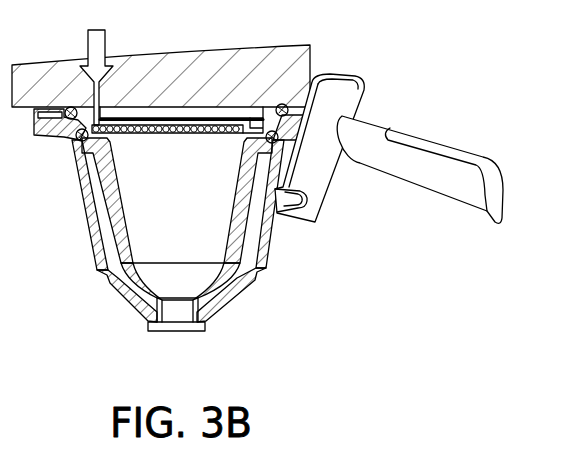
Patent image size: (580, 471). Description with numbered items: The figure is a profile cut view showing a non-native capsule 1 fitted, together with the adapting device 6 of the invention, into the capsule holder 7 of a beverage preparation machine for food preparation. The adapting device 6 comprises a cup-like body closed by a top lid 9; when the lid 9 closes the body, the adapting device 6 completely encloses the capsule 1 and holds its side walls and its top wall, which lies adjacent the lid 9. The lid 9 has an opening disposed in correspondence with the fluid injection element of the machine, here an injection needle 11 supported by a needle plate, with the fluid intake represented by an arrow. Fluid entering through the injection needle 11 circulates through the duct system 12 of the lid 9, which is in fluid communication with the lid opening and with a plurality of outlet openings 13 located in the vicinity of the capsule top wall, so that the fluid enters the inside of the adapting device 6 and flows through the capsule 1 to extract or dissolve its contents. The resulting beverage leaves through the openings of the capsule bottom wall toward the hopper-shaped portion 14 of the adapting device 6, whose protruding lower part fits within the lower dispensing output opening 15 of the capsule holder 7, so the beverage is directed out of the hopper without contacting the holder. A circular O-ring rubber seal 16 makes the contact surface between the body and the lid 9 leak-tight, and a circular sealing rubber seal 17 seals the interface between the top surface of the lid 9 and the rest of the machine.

The capsule 1 is at (177, 268).
The adapting device 6 is at (254, 235).
The capsule holder 7 is at (84, 252).
The top lid 9 is at (108, 75).
The injection needle 11 is at (196, 68).
The duct system 12 is at (125, 113).
The outlet openings 13 is at (185, 134).
The hopper-shaped portion 14 is at (133, 303).
The output opening 15 is at (204, 338).
The O-ring rubber seal 16 is at (73, 138).
The circular sealing rubber seal 17 is at (74, 106).